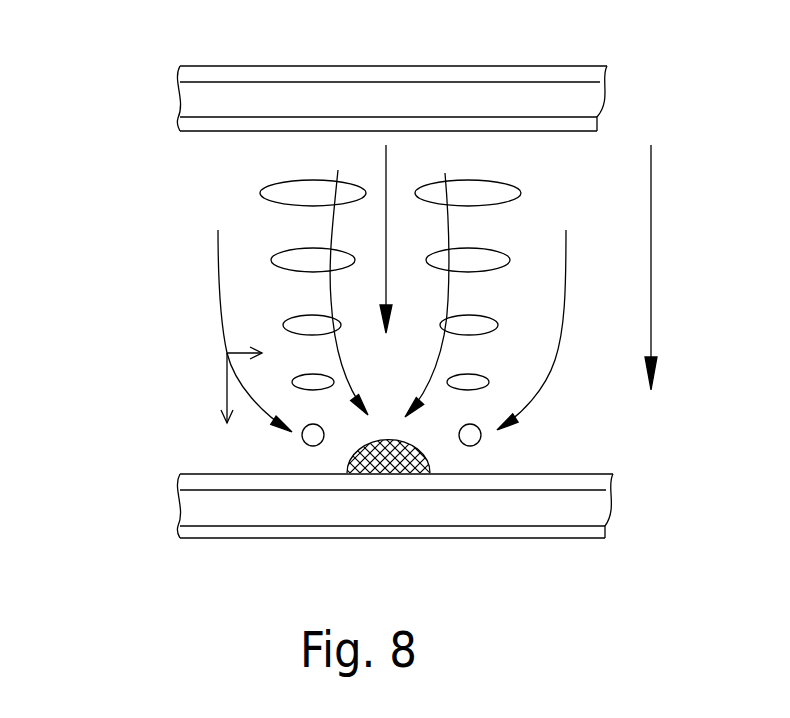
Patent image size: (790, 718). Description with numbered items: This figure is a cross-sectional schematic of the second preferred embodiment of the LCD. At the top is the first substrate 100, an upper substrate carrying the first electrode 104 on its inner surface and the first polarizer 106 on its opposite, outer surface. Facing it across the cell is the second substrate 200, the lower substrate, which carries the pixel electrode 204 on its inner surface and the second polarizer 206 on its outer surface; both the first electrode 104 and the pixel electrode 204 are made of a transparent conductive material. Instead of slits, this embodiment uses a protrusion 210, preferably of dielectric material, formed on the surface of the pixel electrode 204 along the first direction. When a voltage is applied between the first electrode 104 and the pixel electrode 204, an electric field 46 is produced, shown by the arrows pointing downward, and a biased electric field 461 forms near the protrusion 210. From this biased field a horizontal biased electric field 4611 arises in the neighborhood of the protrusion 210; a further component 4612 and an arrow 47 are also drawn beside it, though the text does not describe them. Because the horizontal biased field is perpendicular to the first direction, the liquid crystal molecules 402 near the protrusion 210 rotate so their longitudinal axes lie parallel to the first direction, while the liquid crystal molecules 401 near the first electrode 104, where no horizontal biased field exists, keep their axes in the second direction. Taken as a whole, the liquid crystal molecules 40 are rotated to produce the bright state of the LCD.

The first substrate 100 is at (198, 103).
The first polarizer 106 is at (200, 77).
The first electrode 104 is at (197, 126).
The second substrate 200 is at (200, 510).
The pixel electrode 204 is at (203, 483).
The second polarizer 206 is at (200, 532).
The protrusion 210 is at (427, 470).
The liquid crystal molecules 40 is at (277, 190).
The liquid crystal molecules 401 is at (487, 188).
The liquid crystal molecules 402 is at (481, 441).
The electric field 46 is at (389, 281).
The biased electric field 461 is at (278, 444).
The horizontal biased electric field 4611 is at (277, 357).
The flow component 4612 is at (220, 331).
The pressing direction 47 is at (658, 287).